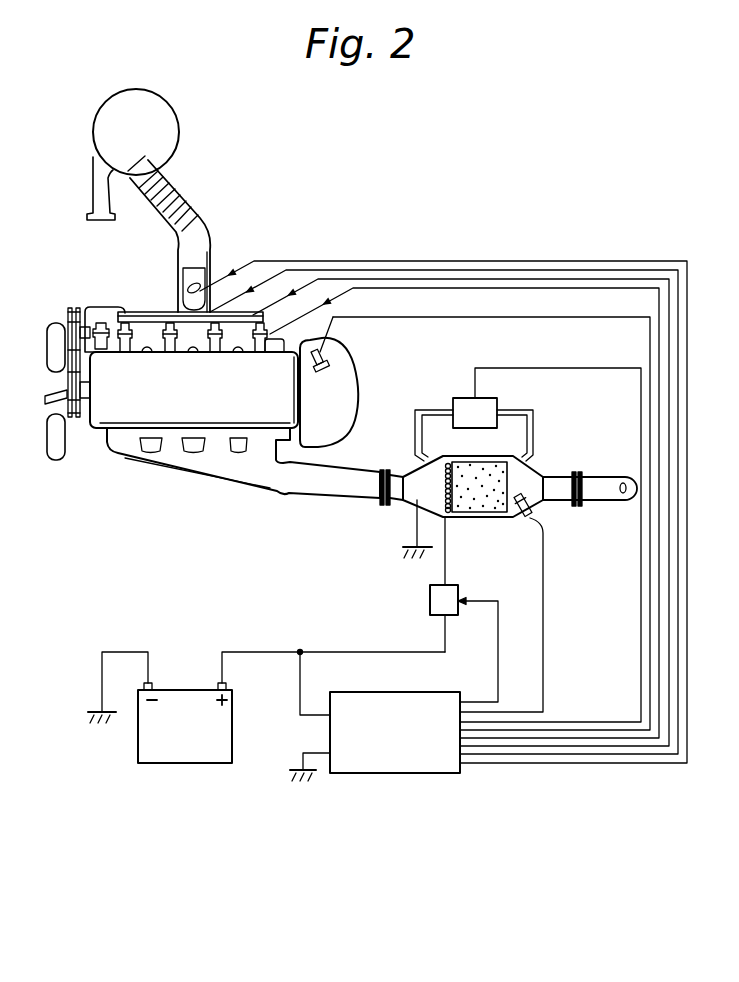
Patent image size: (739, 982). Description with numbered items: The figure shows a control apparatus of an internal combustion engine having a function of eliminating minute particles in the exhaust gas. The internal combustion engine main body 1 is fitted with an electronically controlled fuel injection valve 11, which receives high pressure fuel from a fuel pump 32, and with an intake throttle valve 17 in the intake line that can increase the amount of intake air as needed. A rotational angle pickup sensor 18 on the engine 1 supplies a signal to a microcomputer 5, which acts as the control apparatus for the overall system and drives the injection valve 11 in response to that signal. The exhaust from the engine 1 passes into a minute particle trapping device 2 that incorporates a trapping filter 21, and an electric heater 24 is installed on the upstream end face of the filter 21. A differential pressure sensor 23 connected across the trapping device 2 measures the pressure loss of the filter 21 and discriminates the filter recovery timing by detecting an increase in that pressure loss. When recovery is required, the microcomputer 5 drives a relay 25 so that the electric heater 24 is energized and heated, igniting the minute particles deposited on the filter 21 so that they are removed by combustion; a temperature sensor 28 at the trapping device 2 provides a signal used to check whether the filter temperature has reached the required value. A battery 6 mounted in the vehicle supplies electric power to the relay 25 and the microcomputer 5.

The internal combustion engine main body 1 is at (112, 415).
The minute particle trapping device 2 is at (462, 514).
The microcomputer 5 is at (394, 773).
The battery 6 is at (170, 764).
The electronically controlled fuel injection valve 11 is at (110, 310).
The intake throttle valve 17 is at (208, 273).
The rotational angle pickup sensor 18 is at (333, 358).
The trapping filter 21 is at (492, 500).
The differential pressure sensor 23 is at (450, 398).
The electric heater 24 is at (447, 480).
The relay 25 is at (430, 601).
The temperature sensor 28 is at (538, 512).
The fuel pump 32 is at (93, 306).